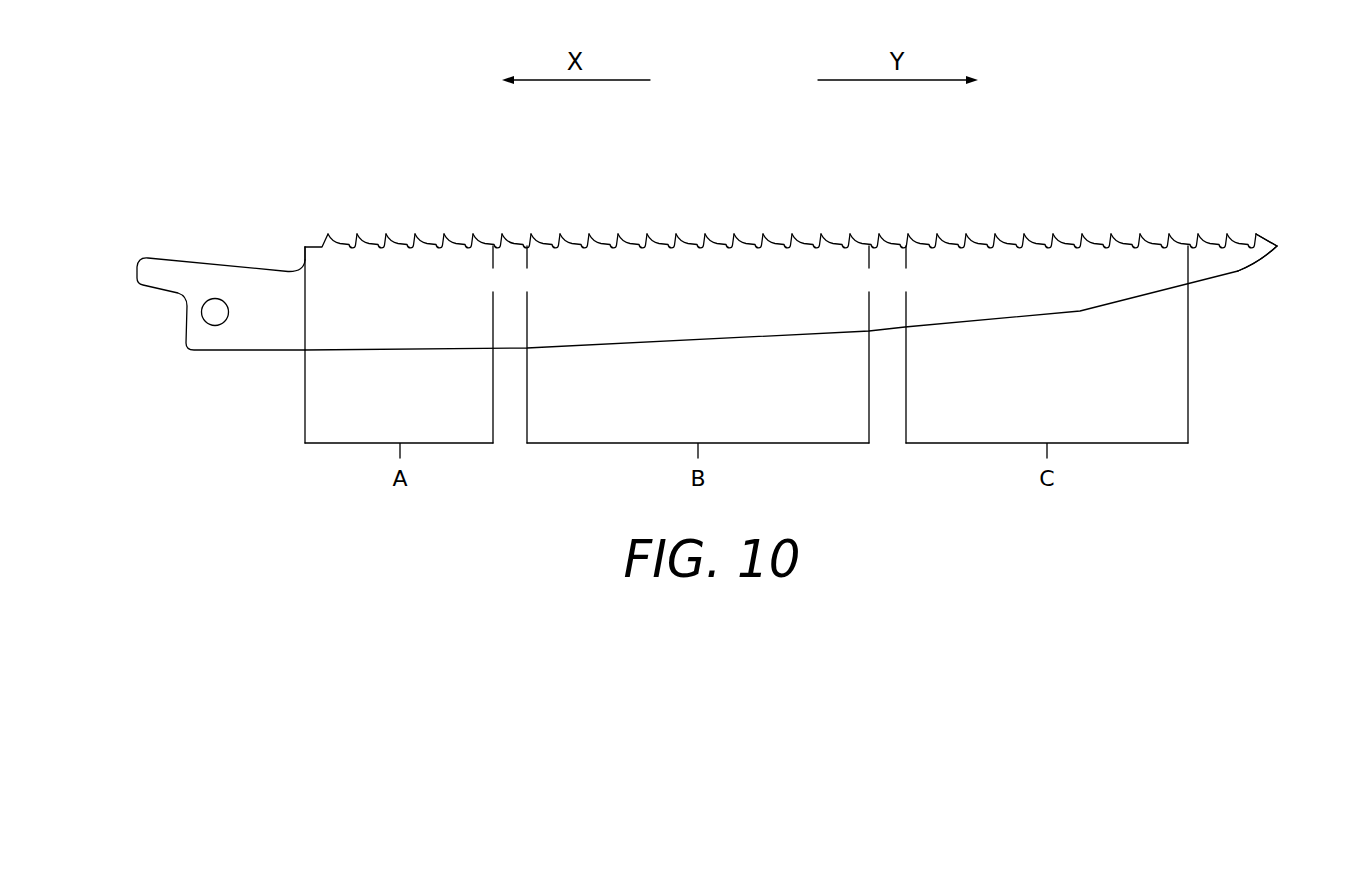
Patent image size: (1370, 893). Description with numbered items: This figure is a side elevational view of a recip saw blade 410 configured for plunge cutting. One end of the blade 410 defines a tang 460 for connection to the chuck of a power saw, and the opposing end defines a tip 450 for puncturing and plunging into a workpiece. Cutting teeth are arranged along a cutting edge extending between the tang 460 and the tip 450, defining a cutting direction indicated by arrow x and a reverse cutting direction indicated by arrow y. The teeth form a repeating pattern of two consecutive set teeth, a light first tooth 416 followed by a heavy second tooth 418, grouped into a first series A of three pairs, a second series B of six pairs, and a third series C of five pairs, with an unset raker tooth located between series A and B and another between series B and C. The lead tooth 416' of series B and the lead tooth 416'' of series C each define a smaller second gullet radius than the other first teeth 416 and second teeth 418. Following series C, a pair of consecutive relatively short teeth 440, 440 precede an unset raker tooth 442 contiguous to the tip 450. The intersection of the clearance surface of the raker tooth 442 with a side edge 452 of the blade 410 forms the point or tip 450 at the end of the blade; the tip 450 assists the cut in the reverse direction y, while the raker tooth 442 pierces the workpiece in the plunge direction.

The saw blade 410 is at (322, 99).
The first set tooth 416 is at (741, 216).
The second set tooth 418 is at (770, 197).
The lead tooth of second series B 416' is at (537, 216).
The lead tooth of third series C 416'' is at (914, 216).
The short tooth 440 is at (1219, 197).
The raker tooth 442 is at (1258, 232).
The tip 450 is at (1290, 252).
The side edge 452 is at (1268, 257).
The tang 460 is at (150, 312).